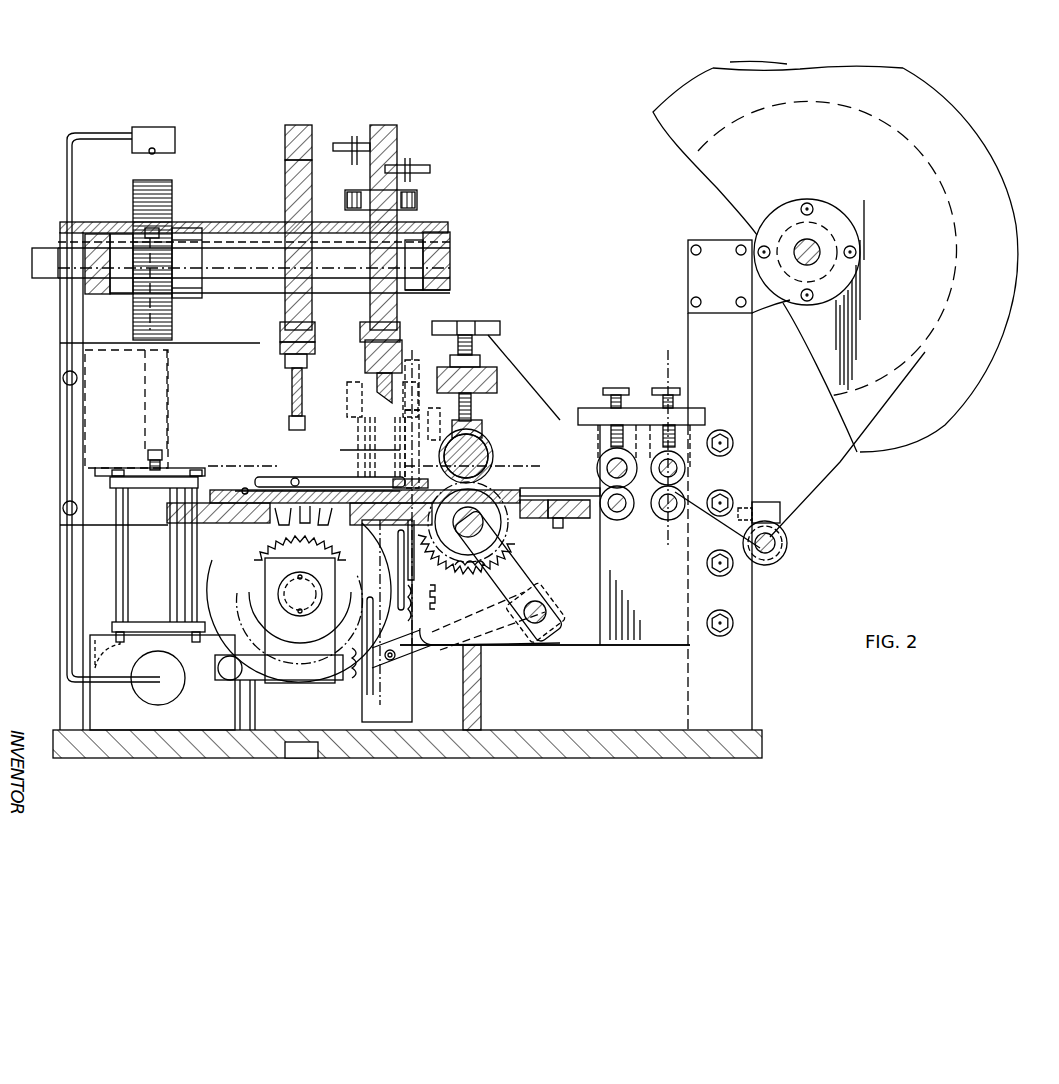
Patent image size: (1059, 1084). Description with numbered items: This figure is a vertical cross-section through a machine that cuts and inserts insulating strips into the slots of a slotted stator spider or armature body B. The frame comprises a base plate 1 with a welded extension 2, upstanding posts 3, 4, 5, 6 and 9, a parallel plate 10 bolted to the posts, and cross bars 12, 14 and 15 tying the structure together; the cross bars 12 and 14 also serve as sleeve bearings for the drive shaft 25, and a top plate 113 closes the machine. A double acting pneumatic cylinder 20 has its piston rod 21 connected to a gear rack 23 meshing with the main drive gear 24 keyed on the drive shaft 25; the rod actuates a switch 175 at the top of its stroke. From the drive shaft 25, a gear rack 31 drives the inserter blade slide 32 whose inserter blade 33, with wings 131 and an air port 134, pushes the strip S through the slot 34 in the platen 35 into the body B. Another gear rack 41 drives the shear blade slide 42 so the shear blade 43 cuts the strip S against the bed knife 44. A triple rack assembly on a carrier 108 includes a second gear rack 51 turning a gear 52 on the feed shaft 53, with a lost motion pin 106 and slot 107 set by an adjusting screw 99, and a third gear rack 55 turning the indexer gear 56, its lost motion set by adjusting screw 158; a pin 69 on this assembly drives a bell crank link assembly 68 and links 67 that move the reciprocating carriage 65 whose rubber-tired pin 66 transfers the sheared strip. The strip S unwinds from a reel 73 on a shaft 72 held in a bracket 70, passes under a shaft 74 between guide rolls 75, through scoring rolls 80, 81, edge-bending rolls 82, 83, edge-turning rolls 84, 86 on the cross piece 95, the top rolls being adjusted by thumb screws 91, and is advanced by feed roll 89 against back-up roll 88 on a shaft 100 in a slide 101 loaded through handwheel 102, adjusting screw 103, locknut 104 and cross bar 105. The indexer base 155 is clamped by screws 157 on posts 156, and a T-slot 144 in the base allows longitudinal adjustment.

The base plate 1 is at (422, 758).
The extension 2 is at (641, 758).
The upstanding post 3 is at (668, 356).
The upstanding post 4 is at (60, 310).
The upstanding post 5 is at (590, 470).
The upstanding post 6 is at (550, 470).
The upstanding post 9 is at (752, 367).
The parallel plate 10 is at (215, 468).
The cross bar 12 is at (92, 233).
The cross bar 14 is at (450, 232).
The cross bar 15 is at (242, 290).
The double acting pneumatic cylinder 20 is at (127, 590).
The piston rod 21 is at (148, 458).
The gear rack 23 is at (145, 383).
The main drive gear 24 is at (172, 180).
The drive shaft 25 is at (216, 285).
The gear rack 31 is at (285, 190).
The inserter blade slide 32 is at (290, 372).
The inserter blade 33 is at (292, 403).
The slot 34 is at (308, 488).
The platen 35 is at (248, 490).
The gear rack 41 is at (370, 305).
The shear blade slide 42 is at (402, 352).
The shear blade 43 is at (392, 385).
The bed knife 44 is at (430, 508).
The second gear rack 51 is at (412, 595).
The gear 52 is at (456, 560).
The shaft 53 is at (478, 540).
The third gear rack 55 is at (352, 672).
The gear 56 is at (318, 548).
The reciprocating carriage 65 is at (262, 468).
The rubber-tired pin 66 is at (292, 478).
The links 67 is at (400, 478).
The bell crank link assembly 68 is at (538, 575).
The pin 69 is at (400, 660).
The bracket 70 is at (773, 302).
The shaft 72 is at (818, 248).
The reel 73 is at (1010, 205).
The shaft 74 is at (778, 543).
The guide rolls 75 is at (782, 558).
The scoring roll 80 is at (686, 470).
The scoring roll 81 is at (681, 512).
The roll 82 is at (602, 458).
The roll 83 is at (628, 512).
The roll 84 is at (556, 500).
The roll 86 is at (540, 486).
The back-up roll 88 is at (482, 428).
The feed roll 89 is at (473, 572).
The thumb screws 91 is at (660, 388).
The cross piece 95 is at (562, 522).
The adjusting screw 99 is at (412, 177).
The shaft 100 is at (485, 448).
The slide 101 is at (490, 400).
The handwheel 102 is at (484, 321).
The adjusting screw 103 is at (480, 338).
The locknut 104 is at (480, 360).
The cross bar 105 is at (497, 372).
The lost motion pin 106 is at (418, 530).
The slot 107 is at (398, 612).
The carrier 108 is at (397, 132).
The top plate 113 is at (198, 222).
The wings 131 is at (289, 425).
The port 134 is at (285, 356).
The T-slot 144 is at (307, 753).
The base 155 is at (280, 672).
The posts 156 is at (244, 712).
The screws 157 is at (225, 680).
The adjusting screw 158 is at (352, 136).
The switch 175 is at (175, 130).
The armature body B is at (222, 628).
The insulating strip S is at (832, 468).